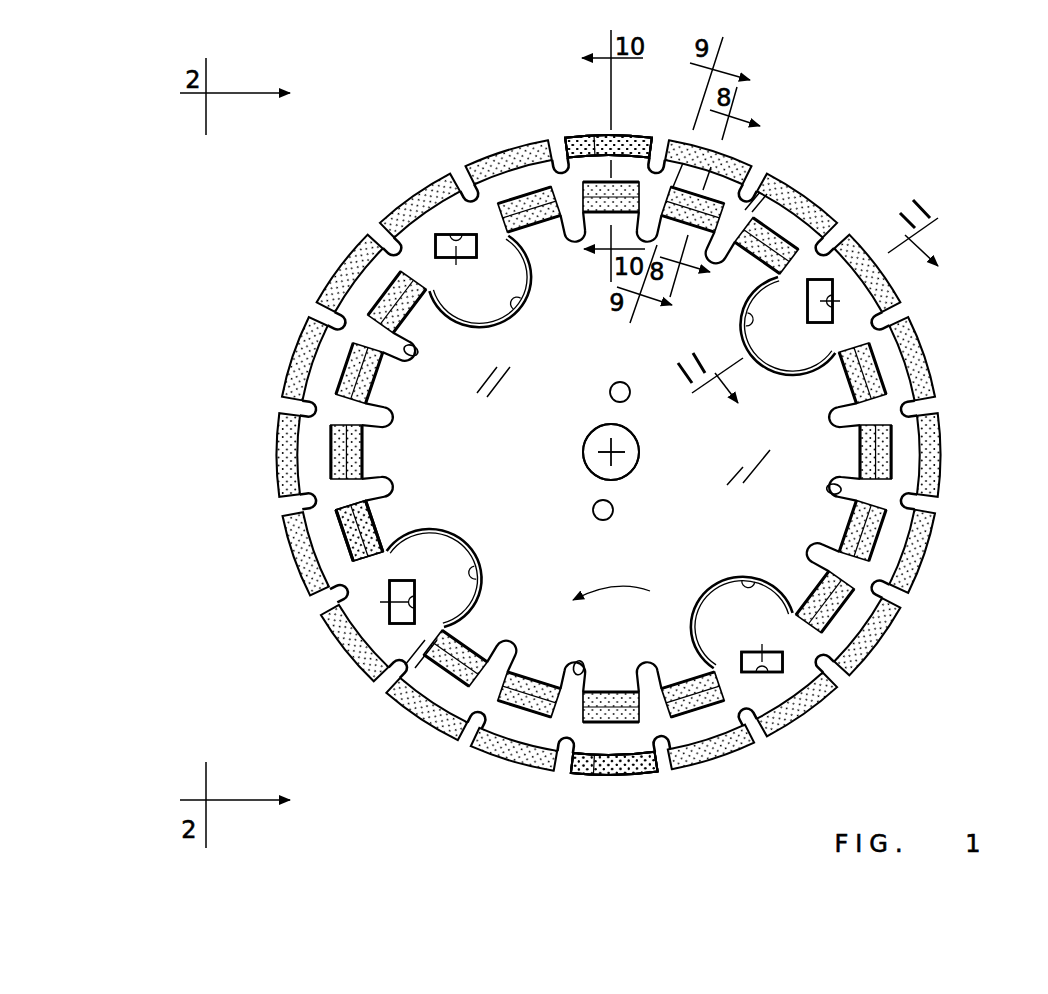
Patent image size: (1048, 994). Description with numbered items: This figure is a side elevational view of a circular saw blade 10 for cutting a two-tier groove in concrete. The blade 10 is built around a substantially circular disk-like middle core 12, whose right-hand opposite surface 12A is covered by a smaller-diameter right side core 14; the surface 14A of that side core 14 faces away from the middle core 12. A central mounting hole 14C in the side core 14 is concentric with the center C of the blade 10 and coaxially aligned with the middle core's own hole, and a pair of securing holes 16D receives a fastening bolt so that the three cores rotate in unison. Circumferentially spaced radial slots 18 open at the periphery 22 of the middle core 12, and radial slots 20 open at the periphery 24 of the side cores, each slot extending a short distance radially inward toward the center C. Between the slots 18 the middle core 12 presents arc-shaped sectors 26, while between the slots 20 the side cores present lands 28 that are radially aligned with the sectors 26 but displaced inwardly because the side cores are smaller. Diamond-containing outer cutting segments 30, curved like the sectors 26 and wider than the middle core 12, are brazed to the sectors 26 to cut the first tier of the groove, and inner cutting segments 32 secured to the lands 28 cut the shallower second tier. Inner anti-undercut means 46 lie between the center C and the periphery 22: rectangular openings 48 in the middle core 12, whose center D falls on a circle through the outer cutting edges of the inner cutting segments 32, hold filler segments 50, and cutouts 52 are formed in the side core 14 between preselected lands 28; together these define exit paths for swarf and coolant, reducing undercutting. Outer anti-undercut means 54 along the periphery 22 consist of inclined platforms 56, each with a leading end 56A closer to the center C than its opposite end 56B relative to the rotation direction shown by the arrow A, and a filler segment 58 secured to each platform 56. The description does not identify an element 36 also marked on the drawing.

The circular saw blade 10 is at (605, 454).
The middle core 12 is at (608, 454).
The opposite surface of middle core 12A is at (683, 741).
The right side core 14 is at (605, 404).
The opposite surface of right side core 14A is at (494, 459).
The central mounting hole of right side core 14C is at (586, 446).
The securing holes of left side core 16D is at (609, 392).
The radial slots of middle core 18 is at (475, 187).
The radial slots of side cores 20 is at (414, 357).
The periphery of middle core 22 is at (408, 200).
The periphery of side cores 24 is at (428, 722).
The sectors 26 is at (345, 256).
The lands 28 is at (872, 352).
The outer cutting segments 30 is at (300, 345).
The inner cutting segments 32 is at (352, 524).
The winding blocks 36 is at (528, 195).
The inner anti-undercut means 46 is at (513, 329).
The openings 48 is at (464, 237).
The filler segments 50 is at (478, 247).
The cutouts 52 is at (523, 299).
The outer anti-undercut means 54 is at (587, 124).
The platforms 56 is at (618, 131).
The closer end of platform 56A is at (662, 135).
The opposite end of platform 56B is at (563, 133).
The filler segment 58 is at (600, 131).
The arrow A is at (611, 582).
The center of blade C is at (622, 450).
The center of opening D is at (613, 454).